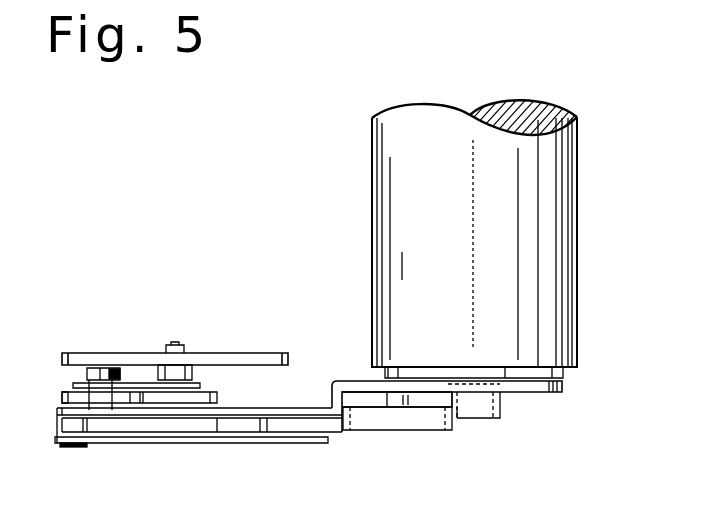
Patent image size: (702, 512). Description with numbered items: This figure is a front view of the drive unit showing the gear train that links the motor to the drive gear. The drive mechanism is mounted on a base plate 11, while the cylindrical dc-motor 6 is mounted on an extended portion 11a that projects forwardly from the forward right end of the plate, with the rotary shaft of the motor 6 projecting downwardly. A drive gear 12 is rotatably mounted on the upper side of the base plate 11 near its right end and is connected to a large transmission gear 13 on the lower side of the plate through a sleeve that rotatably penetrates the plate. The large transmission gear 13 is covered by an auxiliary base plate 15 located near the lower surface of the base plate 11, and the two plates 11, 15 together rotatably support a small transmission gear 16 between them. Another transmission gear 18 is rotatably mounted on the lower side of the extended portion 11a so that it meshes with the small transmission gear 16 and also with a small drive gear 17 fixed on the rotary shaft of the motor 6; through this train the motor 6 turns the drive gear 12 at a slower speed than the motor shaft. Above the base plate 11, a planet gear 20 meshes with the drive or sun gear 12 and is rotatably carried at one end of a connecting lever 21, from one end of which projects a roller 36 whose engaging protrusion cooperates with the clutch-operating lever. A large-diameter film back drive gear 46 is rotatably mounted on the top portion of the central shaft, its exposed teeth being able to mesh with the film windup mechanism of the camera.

The motor 6 is at (577, 215).
The base plate 11 is at (52, 415).
The extended portion 11a is at (350, 382).
The drive gear 12 is at (218, 402).
The large transmission gear 13 is at (122, 426).
The auxiliary base plate 15 is at (203, 441).
The small transmission gear 16 is at (340, 434).
The small drive gear 17 is at (500, 405).
The transmission gear 18 is at (418, 432).
The planet gear 20 is at (62, 398).
The connecting lever 21 is at (136, 372).
The roller 36 is at (104, 358).
The film back drive gear 46 is at (243, 353).